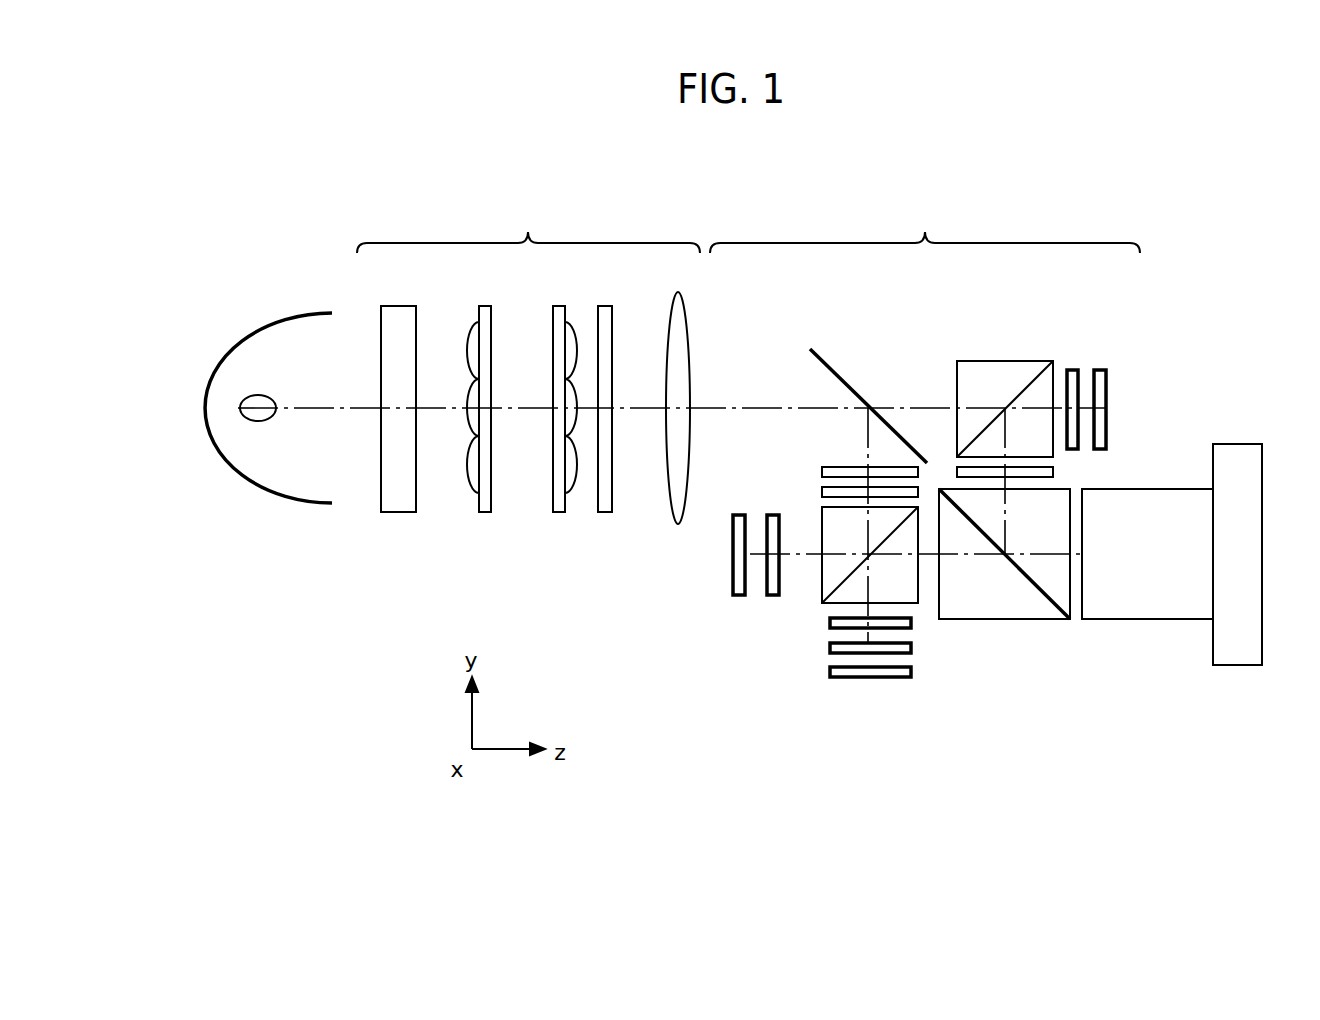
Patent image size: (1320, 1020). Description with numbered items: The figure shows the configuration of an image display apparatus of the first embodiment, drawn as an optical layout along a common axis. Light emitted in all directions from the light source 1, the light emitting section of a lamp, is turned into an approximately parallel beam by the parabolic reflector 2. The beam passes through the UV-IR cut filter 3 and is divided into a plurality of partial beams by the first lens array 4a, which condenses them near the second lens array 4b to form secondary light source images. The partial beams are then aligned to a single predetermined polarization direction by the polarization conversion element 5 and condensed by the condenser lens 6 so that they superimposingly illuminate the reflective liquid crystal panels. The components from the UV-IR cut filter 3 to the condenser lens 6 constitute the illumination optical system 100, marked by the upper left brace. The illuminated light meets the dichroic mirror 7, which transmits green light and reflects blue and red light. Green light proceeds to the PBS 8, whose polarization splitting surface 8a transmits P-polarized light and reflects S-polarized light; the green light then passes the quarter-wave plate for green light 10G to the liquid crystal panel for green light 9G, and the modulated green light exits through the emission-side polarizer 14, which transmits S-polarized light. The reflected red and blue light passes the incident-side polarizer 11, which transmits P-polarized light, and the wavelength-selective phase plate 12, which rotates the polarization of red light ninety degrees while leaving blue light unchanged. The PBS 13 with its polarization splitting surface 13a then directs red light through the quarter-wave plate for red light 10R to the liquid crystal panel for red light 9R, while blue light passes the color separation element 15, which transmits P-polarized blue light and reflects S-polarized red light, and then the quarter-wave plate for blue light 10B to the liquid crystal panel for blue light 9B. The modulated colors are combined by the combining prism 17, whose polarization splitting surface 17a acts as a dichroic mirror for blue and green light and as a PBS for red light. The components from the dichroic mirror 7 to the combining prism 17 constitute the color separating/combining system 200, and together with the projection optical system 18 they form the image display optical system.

The light source 1 is at (238, 405).
The parabolic reflector 2 is at (283, 498).
The UV-IR cut filter 3 is at (400, 502).
The first lens array 4a is at (483, 502).
The second lens array 4b is at (558, 502).
The polarization conversion element 5 is at (605, 502).
The condenser lens 6 is at (673, 483).
The dichroic mirror 7 is at (833, 369).
The PBS 8 is at (1026, 361).
The polarization splitting surface 8a is at (1010, 398).
The liquid crystal panel for green light 9G is at (1107, 427).
The quarter-wave plate for green light 10G is at (1075, 369).
The incident-side polarizer 11 is at (840, 470).
The wavelength-selective phase plate 12 is at (825, 492).
The PBS 13 is at (820, 523).
The polarization splitting surface 13a is at (840, 585).
The emission-side polarizer 14 is at (1047, 470).
The color separation element 15 is at (903, 622).
The liquid crystal panel for red light 9R is at (732, 573).
The quarter-wave plate for red light 10R is at (763, 590).
The liquid crystal panel for blue light 9B is at (882, 672).
The quarter-wave plate for blue light 10B is at (900, 647).
The combining prism 17 is at (1049, 620).
The polarization splitting surface 17a is at (1018, 568).
The projection optical system 18 is at (1150, 622).
The illumination optical system 100 is at (528, 226).
The color separating/combining system 200 is at (925, 226).